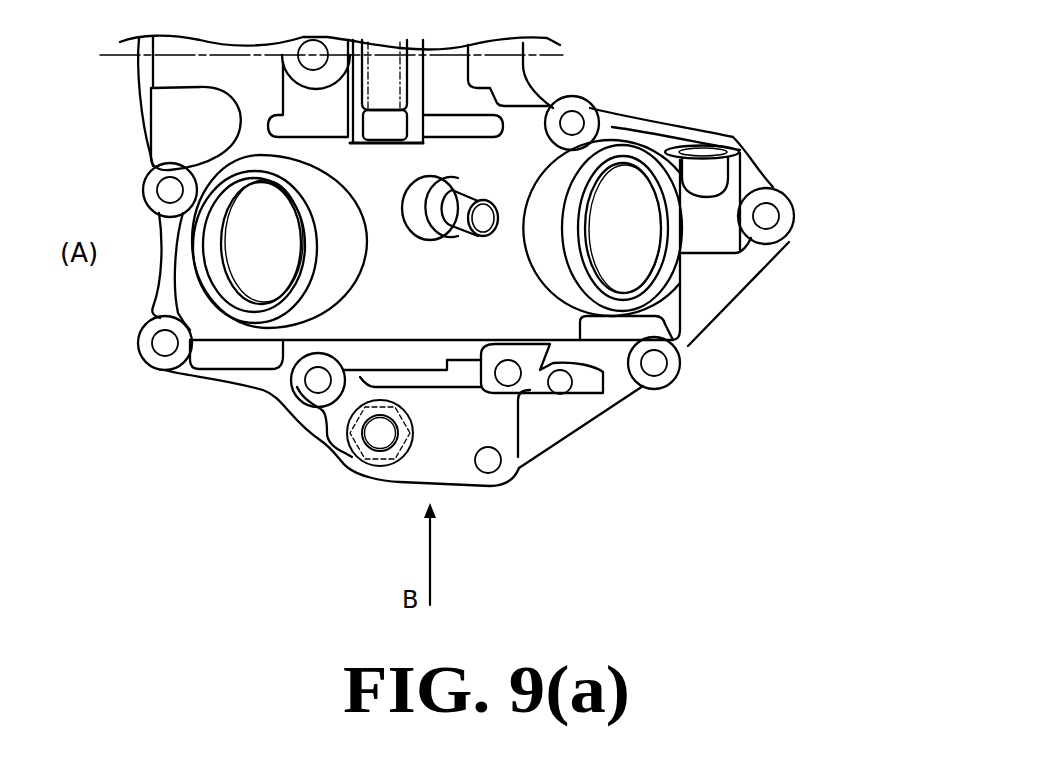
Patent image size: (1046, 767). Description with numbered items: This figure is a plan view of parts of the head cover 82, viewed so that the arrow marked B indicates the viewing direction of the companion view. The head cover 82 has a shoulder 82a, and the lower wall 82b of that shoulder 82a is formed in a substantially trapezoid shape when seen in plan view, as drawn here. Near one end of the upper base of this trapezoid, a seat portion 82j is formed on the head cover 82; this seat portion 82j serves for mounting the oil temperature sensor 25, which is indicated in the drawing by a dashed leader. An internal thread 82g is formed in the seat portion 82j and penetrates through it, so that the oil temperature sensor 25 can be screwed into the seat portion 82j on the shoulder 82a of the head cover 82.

The head cover 82 is at (773, 137).
The shoulder 82a is at (492, 417).
The lower wall 82b is at (452, 487).
The internal thread 82g is at (386, 433).
The seat portion 82j is at (367, 452).
The oil temperature sensor 25 is at (347, 430).